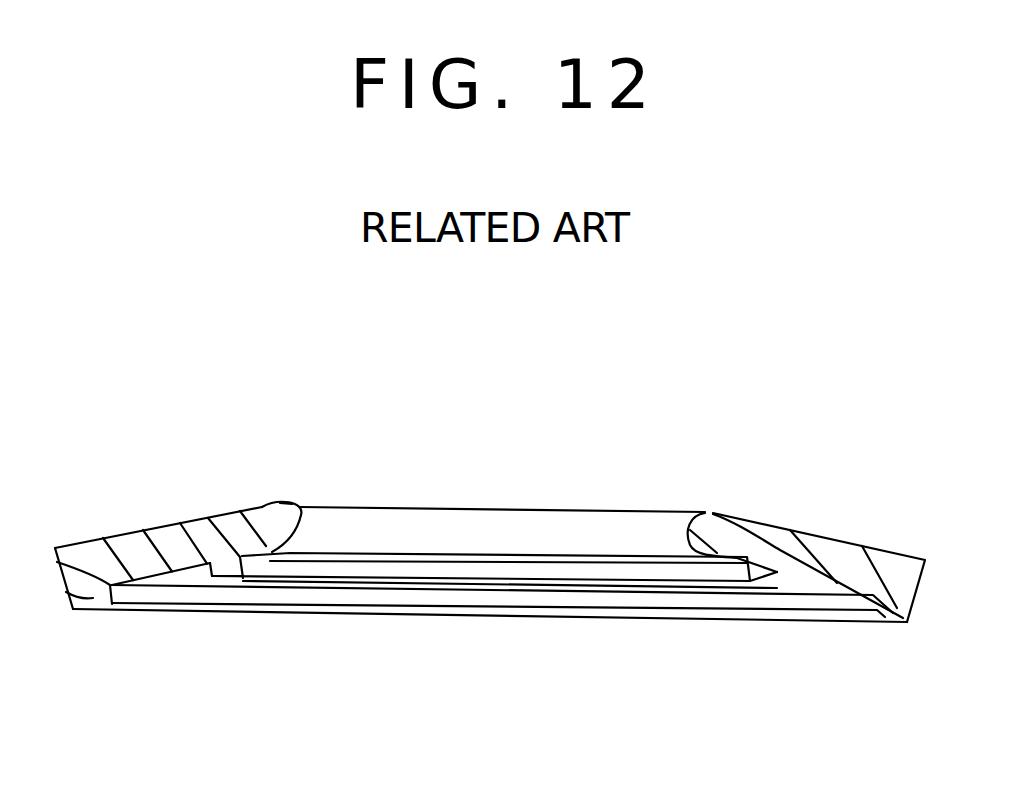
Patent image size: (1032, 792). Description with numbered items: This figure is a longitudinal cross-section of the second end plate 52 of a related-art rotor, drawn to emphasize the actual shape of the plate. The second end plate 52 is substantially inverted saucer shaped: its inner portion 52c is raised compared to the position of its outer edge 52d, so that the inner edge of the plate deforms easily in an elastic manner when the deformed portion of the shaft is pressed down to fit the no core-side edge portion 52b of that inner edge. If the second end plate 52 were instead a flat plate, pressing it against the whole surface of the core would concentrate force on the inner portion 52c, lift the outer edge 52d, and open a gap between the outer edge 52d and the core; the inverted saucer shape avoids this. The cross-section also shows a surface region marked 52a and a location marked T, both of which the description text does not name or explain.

The second end plate 52 is at (110, 548).
The bottom surface 52a is at (267, 512).
The no core-side edge portion 52b is at (248, 508).
The inner portion 52c is at (233, 570).
The outer edge 52d is at (93, 587).
The tip T is at (297, 510).